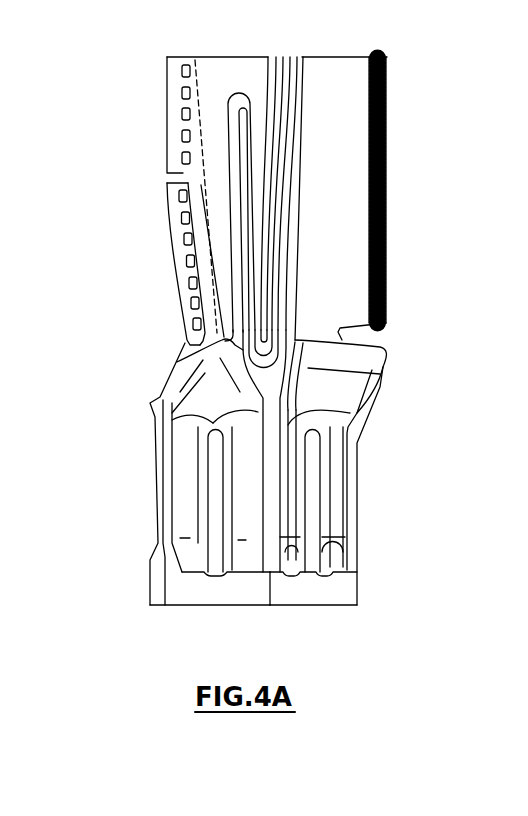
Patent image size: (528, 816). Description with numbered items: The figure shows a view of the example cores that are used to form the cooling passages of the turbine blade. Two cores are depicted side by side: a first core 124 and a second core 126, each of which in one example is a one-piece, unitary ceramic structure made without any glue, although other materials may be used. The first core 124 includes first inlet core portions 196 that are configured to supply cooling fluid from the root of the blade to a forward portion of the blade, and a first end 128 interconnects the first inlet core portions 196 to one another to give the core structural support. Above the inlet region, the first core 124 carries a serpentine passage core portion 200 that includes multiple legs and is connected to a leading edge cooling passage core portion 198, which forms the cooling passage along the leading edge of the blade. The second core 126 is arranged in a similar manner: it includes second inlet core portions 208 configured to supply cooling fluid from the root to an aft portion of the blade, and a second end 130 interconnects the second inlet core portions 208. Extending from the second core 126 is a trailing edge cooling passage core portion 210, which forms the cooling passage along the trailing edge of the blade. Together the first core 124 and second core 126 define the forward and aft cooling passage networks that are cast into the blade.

The first core 124 is at (121, 386).
The second core 126 is at (403, 380).
The first end 128 is at (195, 593).
The second end 130 is at (320, 595).
The first inlet core portions 196 is at (257, 496).
The leading edge cooling passage core portion 198 is at (178, 232).
The serpentine passage core portion 200 is at (217, 87).
The second inlet core portions 208 is at (292, 515).
The trailing edge cooling passage core portion 210 is at (350, 223).